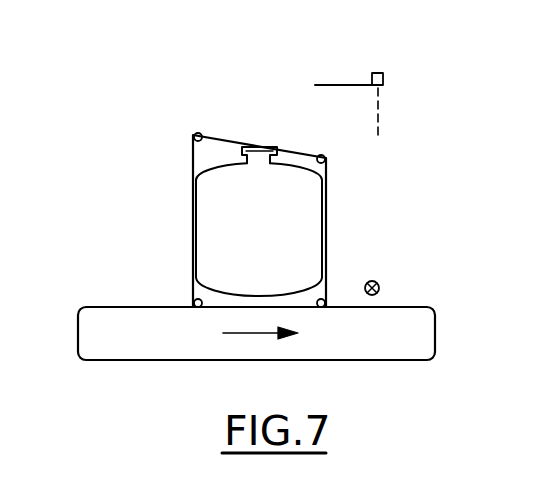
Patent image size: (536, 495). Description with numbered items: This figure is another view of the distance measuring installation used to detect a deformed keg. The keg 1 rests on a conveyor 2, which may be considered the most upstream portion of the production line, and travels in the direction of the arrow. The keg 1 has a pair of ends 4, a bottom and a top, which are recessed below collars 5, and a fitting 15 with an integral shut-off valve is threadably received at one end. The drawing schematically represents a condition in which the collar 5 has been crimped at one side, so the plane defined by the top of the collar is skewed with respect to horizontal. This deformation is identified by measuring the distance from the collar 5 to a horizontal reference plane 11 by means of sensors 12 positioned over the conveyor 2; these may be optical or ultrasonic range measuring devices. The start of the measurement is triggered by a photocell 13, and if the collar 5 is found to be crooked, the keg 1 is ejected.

The keg 1 is at (164, 210).
The conveyor 2 is at (121, 313).
The ends 4 is at (289, 168).
The collars 5 is at (323, 157).
The horizontal reference plane 11 is at (332, 84).
The sensors 12 is at (384, 78).
The photocell 13 is at (379, 283).
The fitting 15 is at (259, 150).